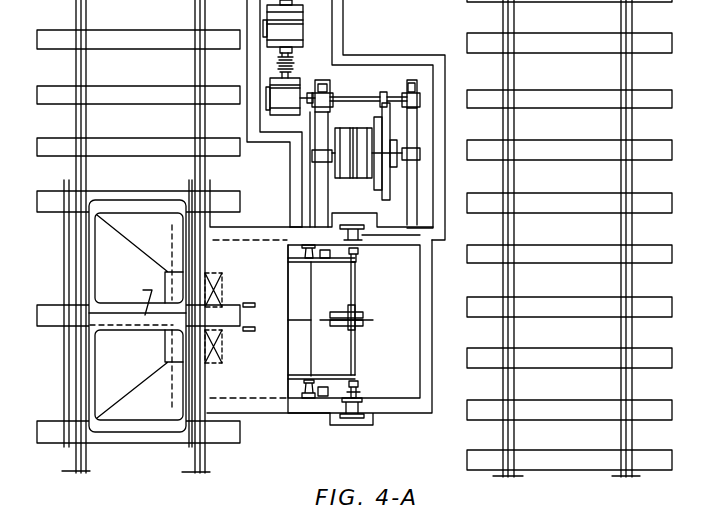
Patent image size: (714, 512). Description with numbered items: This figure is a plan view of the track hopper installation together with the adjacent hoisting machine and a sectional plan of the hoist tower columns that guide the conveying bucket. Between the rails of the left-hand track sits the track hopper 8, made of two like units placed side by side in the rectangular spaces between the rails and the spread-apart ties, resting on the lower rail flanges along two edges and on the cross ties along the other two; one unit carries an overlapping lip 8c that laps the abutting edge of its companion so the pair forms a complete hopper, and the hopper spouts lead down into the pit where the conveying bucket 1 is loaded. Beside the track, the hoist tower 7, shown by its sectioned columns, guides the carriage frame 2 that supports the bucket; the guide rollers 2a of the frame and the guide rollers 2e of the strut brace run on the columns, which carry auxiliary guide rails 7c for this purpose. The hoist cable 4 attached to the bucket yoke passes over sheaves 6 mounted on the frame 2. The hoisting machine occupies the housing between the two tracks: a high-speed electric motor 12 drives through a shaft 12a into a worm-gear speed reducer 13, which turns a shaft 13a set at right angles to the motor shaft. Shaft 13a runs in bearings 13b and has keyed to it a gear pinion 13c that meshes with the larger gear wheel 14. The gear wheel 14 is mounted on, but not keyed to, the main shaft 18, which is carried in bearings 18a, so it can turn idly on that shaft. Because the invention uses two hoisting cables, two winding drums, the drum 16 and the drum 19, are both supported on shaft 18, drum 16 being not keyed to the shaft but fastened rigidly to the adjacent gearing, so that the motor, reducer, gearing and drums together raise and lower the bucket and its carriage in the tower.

The conveying bucket 1 is at (346, 212).
The carriage frame 2 is at (357, 285).
The guide rollers of frame 2a is at (358, 245).
The guide rollers of brace 2e is at (305, 243).
The hoist cable 4 is at (302, 320).
The sheaves 6 is at (370, 323).
The hoist tower 7 is at (362, 232).
The auxiliary guide rails 7c is at (343, 243).
The track hopper 8 is at (128, 313).
The overlapping lip 8c is at (136, 300).
The motor 12 is at (303, 23).
The motor shaft 12a is at (298, 63).
The speed reducer 13 is at (270, 106).
The drive shaft 13a is at (377, 93).
The bearings 13b is at (312, 110).
The gear pinion 13c is at (387, 92).
The gear wheel 14 is at (390, 122).
The winding drum 16 is at (360, 180).
The shaft 18 is at (420, 155).
The bearings of shaft 18a is at (313, 157).
The winding drum 19 is at (358, 122).